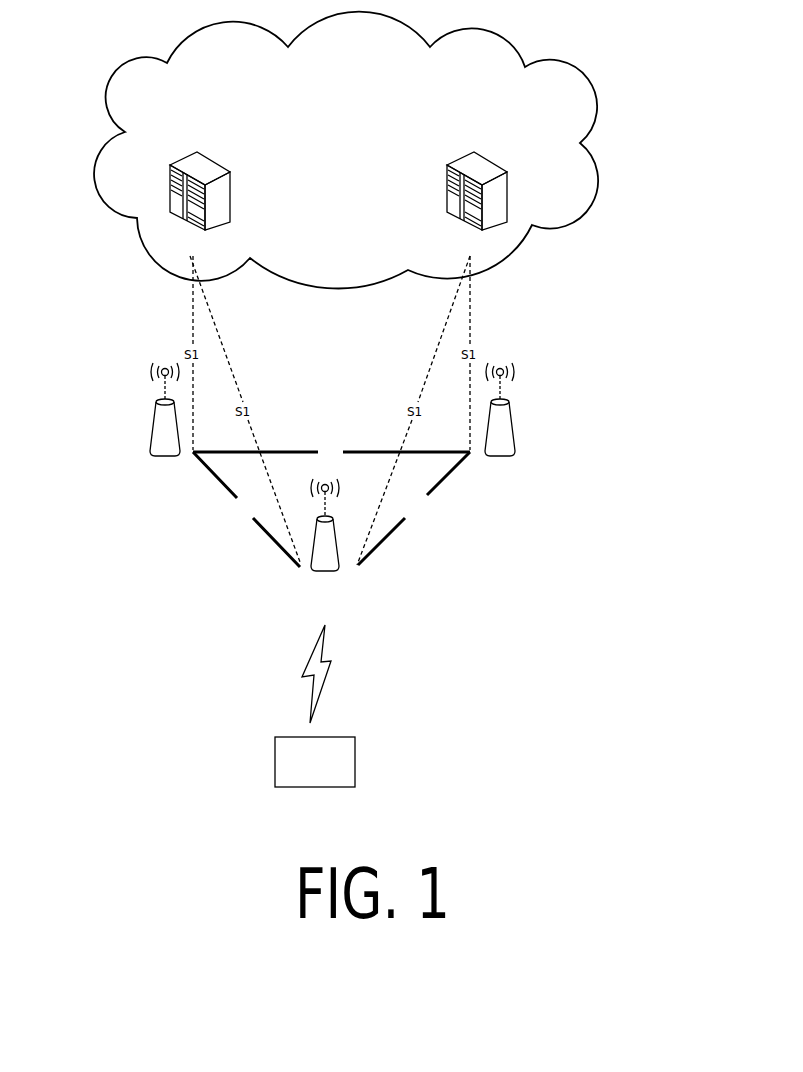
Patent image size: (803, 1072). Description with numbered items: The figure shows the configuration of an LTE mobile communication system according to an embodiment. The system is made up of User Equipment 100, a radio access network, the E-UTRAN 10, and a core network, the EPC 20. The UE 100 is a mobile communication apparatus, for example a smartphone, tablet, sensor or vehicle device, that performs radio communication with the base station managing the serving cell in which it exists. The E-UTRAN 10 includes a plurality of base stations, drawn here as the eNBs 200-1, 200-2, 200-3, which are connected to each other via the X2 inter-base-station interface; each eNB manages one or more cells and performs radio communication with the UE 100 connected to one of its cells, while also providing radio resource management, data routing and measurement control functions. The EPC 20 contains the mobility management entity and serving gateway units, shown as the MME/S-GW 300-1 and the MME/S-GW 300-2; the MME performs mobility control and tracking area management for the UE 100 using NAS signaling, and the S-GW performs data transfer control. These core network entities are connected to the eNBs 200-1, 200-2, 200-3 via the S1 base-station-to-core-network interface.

The core network (Evolved Packet Core) 20 is at (508, 39).
The MME/S-GW 300-1 is at (214, 162).
The MME/S-GW 300-2 is at (489, 162).
The radio access network (E-UTRAN) 10 is at (582, 293).
The base station (eNB) 200-1 is at (153, 432).
The base station (eNB) 200-2 is at (338, 550).
The base station (eNB) 200-3 is at (509, 413).
The User Equipment (UE) 100 is at (356, 762).